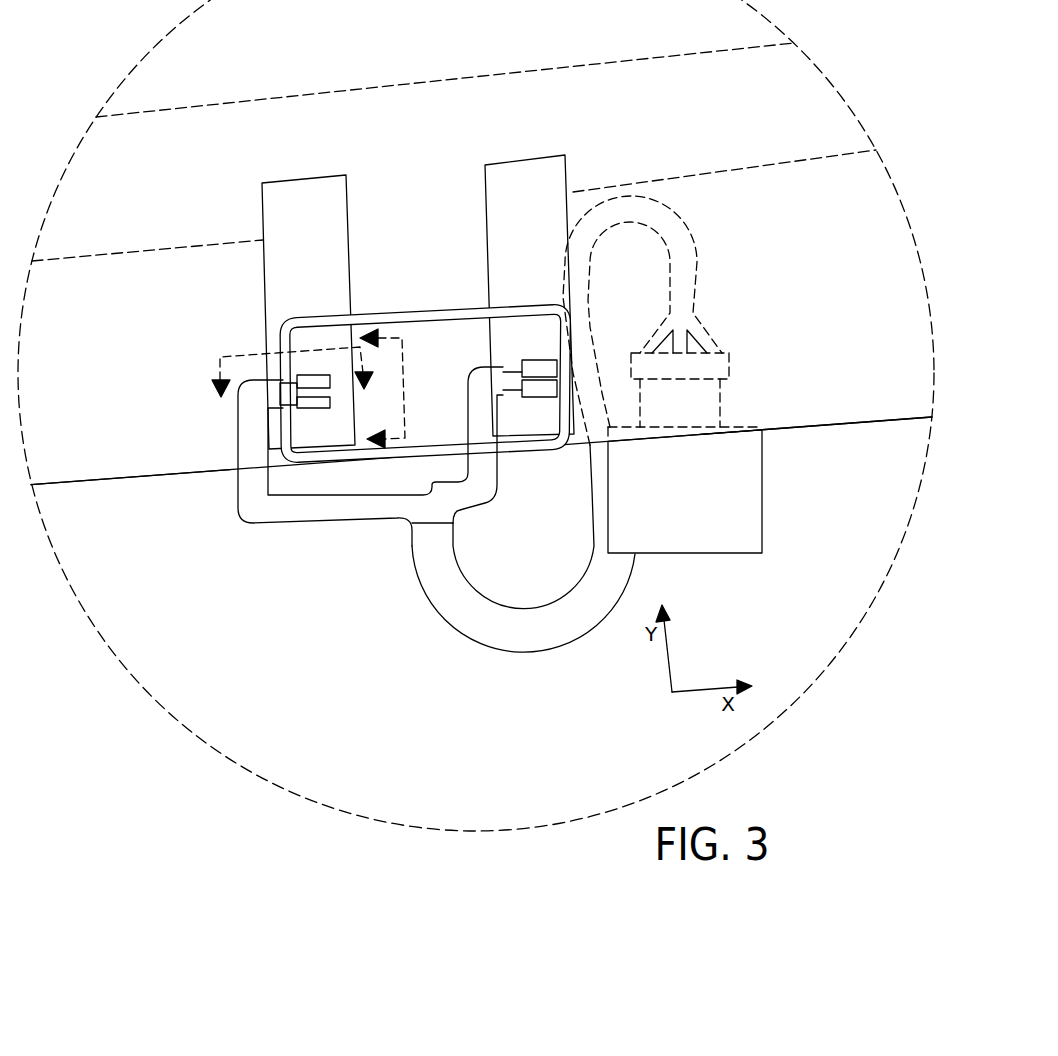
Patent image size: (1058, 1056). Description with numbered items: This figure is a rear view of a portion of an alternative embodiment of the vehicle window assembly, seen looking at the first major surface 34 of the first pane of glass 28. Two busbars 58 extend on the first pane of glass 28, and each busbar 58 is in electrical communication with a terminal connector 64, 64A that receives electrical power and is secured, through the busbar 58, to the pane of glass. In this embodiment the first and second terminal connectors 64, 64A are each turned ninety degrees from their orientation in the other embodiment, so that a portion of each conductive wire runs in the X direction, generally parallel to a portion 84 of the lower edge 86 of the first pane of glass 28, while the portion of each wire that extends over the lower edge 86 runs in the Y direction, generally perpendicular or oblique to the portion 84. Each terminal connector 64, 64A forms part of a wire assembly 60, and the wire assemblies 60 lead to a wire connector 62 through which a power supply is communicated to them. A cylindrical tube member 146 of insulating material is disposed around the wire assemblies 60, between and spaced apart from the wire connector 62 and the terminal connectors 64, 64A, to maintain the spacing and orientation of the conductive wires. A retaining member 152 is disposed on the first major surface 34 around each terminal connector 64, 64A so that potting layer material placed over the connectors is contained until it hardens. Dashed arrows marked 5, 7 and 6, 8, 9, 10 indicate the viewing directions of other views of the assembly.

The first pane of glass 28 is at (828, 410).
The first major surface 34 is at (778, 300).
The busbar 58 is at (303, 184).
The wire assembly 60 is at (340, 513).
The wire connector 62 is at (763, 535).
The terminal connector 64 is at (400, 532).
The terminal connector 64A is at (312, 406).
The portion of the lower edge 84 is at (158, 476).
The lower edge 86 is at (885, 421).
The cylindrical tube member 146 is at (568, 624).
The retaining member 152 is at (463, 305).
The viewing direction of FIG. 5 is at (385, 358).
The viewing direction of FIG. 7 is at (385, 358).
The viewing direction of FIG. 6 is at (212, 383).
The viewing direction of FIG. 8 is at (212, 383).
The viewing direction of FIG. 9 is at (212, 383).
The viewing direction of FIG. 10 is at (212, 383).